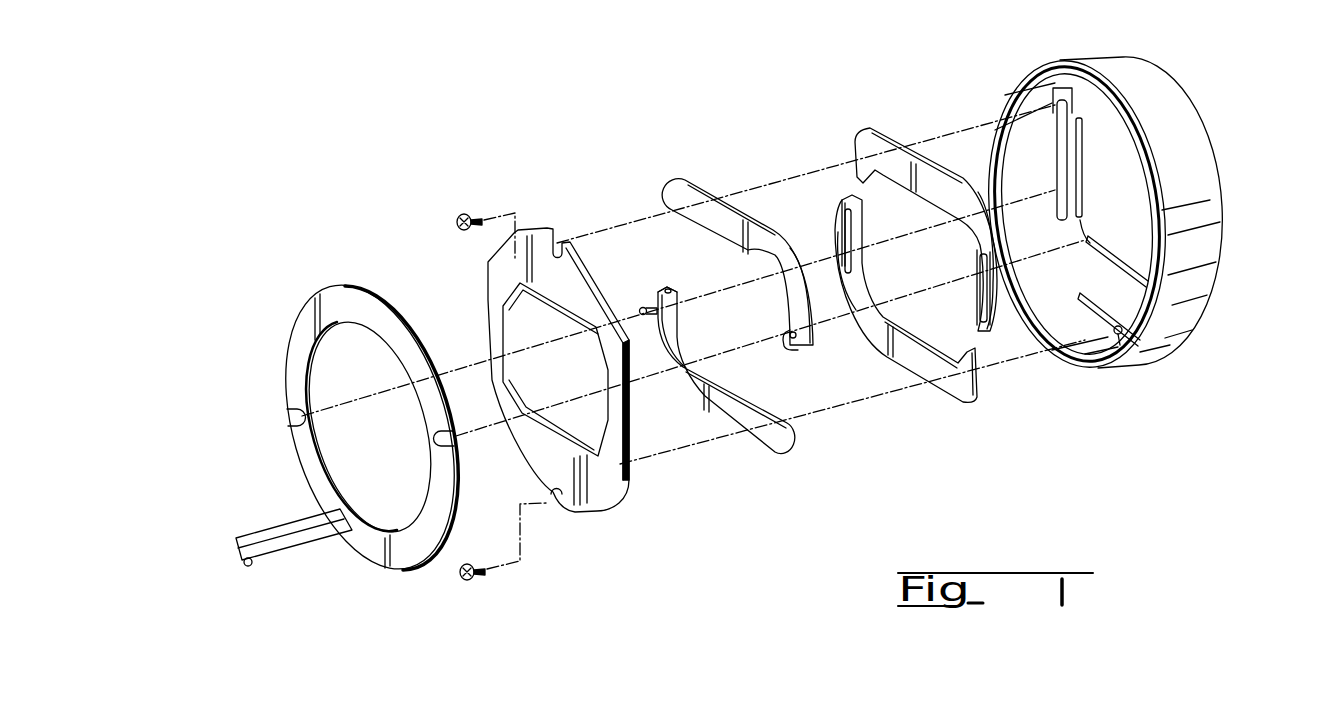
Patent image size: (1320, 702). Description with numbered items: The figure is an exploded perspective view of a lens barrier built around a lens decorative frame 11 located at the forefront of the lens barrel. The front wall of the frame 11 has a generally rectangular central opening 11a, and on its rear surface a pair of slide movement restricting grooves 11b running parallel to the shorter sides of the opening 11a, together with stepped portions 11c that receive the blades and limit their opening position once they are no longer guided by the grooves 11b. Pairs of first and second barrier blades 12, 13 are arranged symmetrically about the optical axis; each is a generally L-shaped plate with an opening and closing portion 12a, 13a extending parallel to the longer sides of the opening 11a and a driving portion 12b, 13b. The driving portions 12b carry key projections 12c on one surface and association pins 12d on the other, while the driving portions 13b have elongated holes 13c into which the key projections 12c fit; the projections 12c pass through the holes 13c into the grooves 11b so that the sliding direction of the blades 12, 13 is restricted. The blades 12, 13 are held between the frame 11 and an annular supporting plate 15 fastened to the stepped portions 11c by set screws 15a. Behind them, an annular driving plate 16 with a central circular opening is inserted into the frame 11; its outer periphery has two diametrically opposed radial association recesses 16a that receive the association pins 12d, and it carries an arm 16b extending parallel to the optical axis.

The lens decorative frame 11 is at (1128, 223).
The central opening 11a is at (1134, 254).
The slide movement restricting grooves 11b is at (1053, 143).
The stepped portions 11c is at (1119, 334).
The first barrier blade 12 is at (703, 298).
The opening and closing portion 12a is at (730, 217).
The driving portion 12b is at (657, 287).
The key projections 12c is at (678, 290).
The association pins 12d is at (653, 288).
The second barrier blade 13 is at (912, 259).
The opening and closing portion 13a is at (922, 168).
The driving portion 13b is at (834, 232).
The elongated holes 13c is at (850, 224).
The annular supporting plate 15 is at (597, 488).
The set screws 15a is at (463, 212).
The annular driving plate 16 is at (346, 300).
The association recesses 16a is at (281, 418).
The arm 16b is at (297, 545).